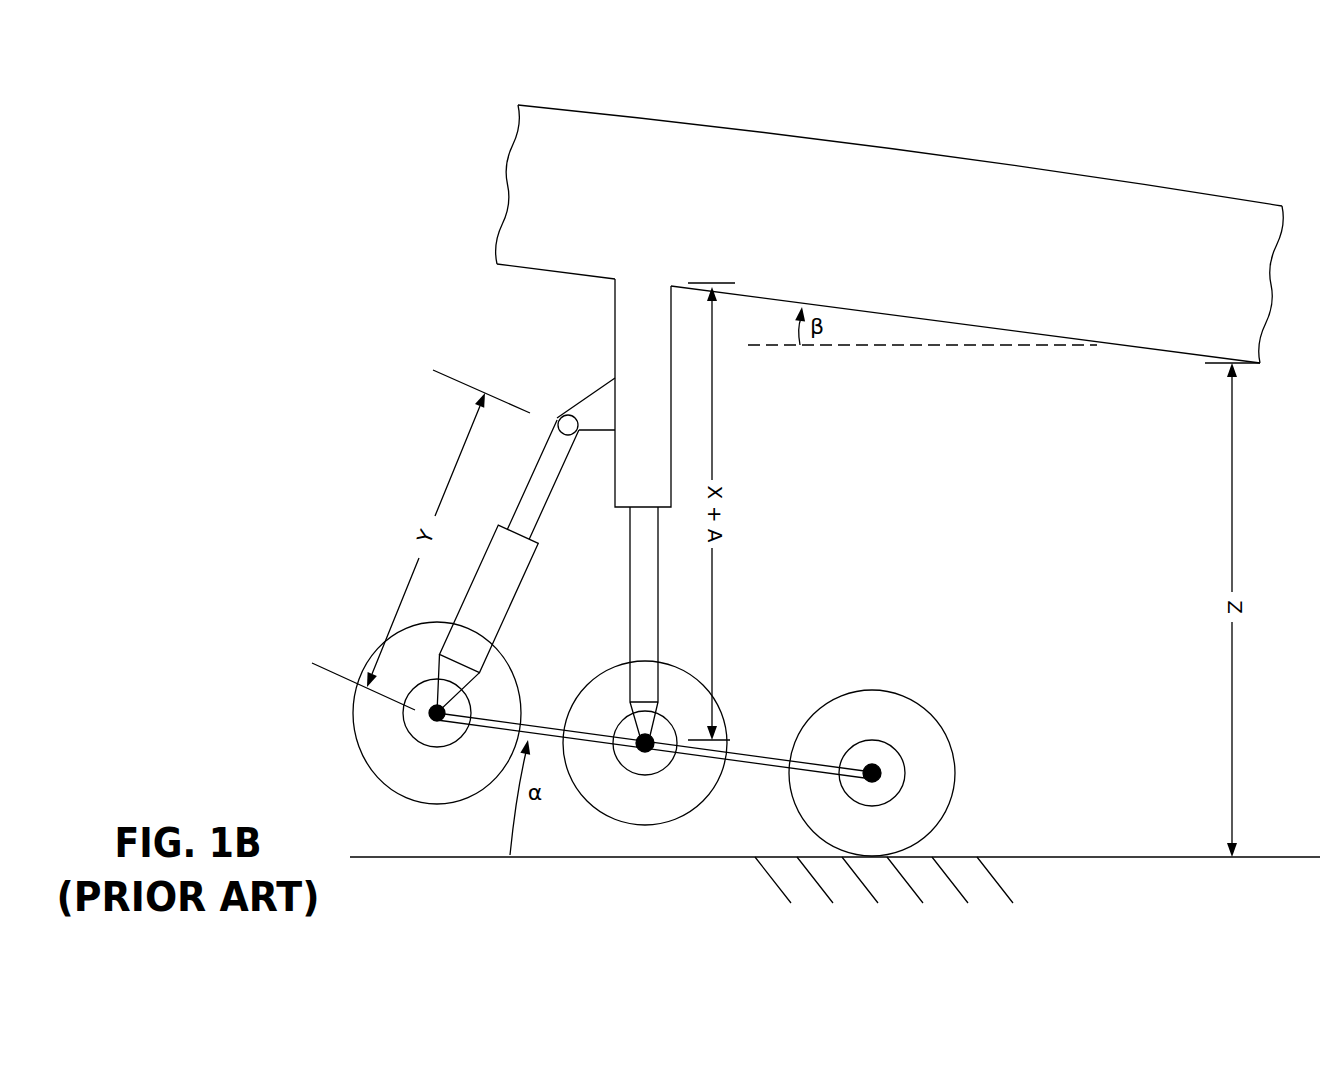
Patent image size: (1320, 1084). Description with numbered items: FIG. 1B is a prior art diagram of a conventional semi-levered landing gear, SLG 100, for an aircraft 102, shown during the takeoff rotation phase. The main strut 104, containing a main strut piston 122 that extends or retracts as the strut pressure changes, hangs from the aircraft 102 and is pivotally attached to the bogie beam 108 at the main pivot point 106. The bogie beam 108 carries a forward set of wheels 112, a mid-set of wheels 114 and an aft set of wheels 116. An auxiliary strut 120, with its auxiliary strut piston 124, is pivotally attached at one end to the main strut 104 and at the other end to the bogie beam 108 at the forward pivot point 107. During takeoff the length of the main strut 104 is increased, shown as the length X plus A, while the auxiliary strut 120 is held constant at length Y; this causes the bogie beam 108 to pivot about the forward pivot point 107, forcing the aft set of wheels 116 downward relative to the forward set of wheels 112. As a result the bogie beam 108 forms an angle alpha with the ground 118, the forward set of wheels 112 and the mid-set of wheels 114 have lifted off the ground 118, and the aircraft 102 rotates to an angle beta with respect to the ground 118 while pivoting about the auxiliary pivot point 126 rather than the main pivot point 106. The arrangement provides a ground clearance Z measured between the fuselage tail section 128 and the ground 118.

The semi-levered landing gear (SLG) 100 is at (417, 246).
The aircraft 102 is at (1213, 185).
The main strut 104 is at (592, 334).
The main pivot point 106 is at (622, 759).
The forward pivot point 107 is at (416, 729).
The bogie beam 108 is at (748, 752).
The forward set of wheels 112 is at (340, 729).
The mid-set of wheels 114 is at (745, 786).
The aft set of wheels 116 is at (948, 696).
The ground 118 is at (981, 832).
The auxiliary strut 120 is at (555, 560).
The main strut piston 122 is at (628, 598).
The auxiliary strut piston 124 is at (540, 452).
The auxiliary pivot point 126 is at (869, 749).
The fuselage tail section 128 is at (1190, 371).